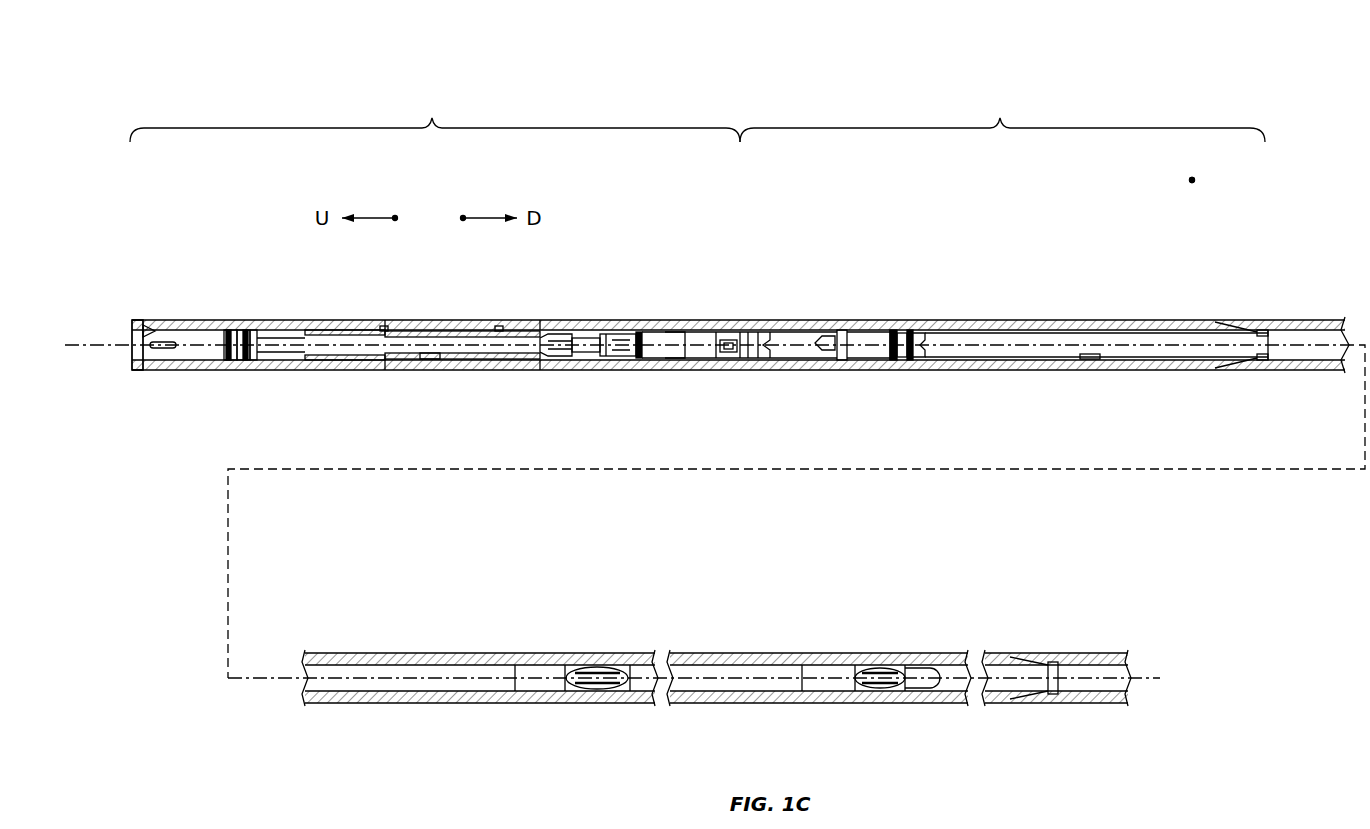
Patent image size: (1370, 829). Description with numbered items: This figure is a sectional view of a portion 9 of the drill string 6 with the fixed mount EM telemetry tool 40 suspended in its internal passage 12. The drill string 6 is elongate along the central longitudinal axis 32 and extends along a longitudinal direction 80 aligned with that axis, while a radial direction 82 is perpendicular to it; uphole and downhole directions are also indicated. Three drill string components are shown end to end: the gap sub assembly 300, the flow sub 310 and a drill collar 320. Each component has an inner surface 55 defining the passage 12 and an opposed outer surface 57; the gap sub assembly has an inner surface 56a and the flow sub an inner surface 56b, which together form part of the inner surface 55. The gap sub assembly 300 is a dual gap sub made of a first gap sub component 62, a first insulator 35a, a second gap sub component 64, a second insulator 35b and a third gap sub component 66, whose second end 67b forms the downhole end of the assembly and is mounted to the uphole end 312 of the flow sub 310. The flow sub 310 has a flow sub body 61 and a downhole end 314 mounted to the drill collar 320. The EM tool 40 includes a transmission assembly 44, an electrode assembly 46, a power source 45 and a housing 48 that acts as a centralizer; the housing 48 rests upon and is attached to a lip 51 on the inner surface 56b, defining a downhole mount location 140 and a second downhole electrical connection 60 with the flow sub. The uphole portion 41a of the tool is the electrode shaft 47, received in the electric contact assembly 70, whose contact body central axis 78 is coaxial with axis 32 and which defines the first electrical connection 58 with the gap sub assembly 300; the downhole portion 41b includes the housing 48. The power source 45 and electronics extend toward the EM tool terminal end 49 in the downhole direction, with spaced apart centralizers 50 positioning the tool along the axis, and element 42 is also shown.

The gap sub assembly 300 is at (435, 115).
The flow sub 310 is at (1002, 115).
The central longitudinal axis 32 is at (125, 322).
The contact body central axis 78 is at (137, 345).
The internal passage 12 is at (150, 344).
The first electrical connection 58 is at (232, 360).
The first gap sub component 62 is at (246, 330).
The electric contact assembly 70 is at (247, 352).
The electrode shaft 47 is at (287, 345).
The uphole portion 41a is at (315, 375).
The downhole portion 41b is at (1000, 386).
The second gap sub component 64 is at (433, 320).
The electrode assembly 46 is at (468, 334).
The first insulator 35a is at (385, 326).
The second insulator 35b is at (498, 326).
The inner surface of gap sub assembly 56a is at (430, 358).
The inner surface of flow sub 56b is at (1090, 357).
The third gap sub component 66 is at (628, 330).
The EM telemetry tool 40 is at (667, 300).
The drill string 6 is at (355, 722).
The portion of the drill string 9 is at (725, 272).
The inner surface 55 is at (690, 357).
The outer surface 57 is at (677, 360).
The second end of third gap sub component 67b is at (733, 322).
The uphole end of flow sub 312 is at (752, 360).
The flow sub body 61 is at (800, 322).
The housing 48 is at (866, 330).
The second downhole electrical connection 60 is at (863, 360).
The downhole mount location 140 is at (900, 330).
The lip 51 is at (912, 322).
The transmission assembly 44 is at (940, 322).
The downhole end of flow sub 314 is at (1217, 368).
The drill collar 320 is at (1313, 305).
The longitudinal direction 80 is at (1192, 180).
The radial direction 82 is at (1192, 180).
The power source 45 is at (324, 670).
The centralizers 50 is at (595, 670).
The tubular 42 is at (733, 668).
The EM tool terminal end 49 is at (928, 672).